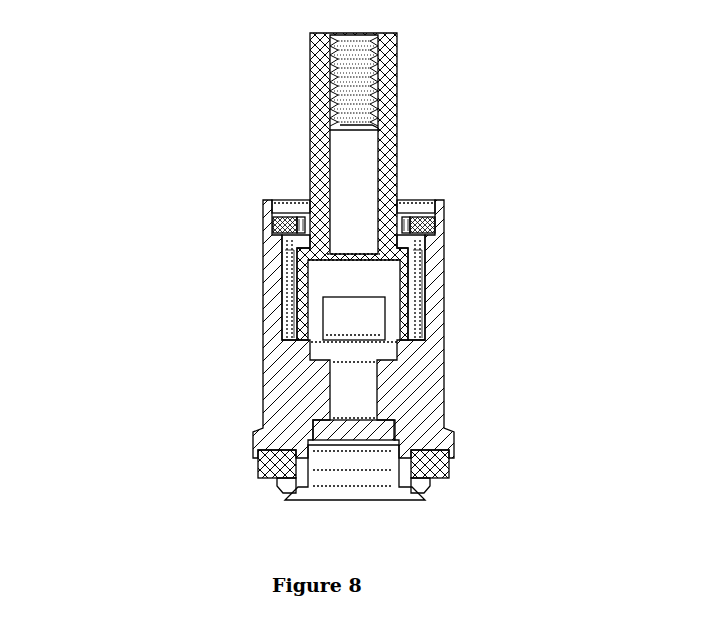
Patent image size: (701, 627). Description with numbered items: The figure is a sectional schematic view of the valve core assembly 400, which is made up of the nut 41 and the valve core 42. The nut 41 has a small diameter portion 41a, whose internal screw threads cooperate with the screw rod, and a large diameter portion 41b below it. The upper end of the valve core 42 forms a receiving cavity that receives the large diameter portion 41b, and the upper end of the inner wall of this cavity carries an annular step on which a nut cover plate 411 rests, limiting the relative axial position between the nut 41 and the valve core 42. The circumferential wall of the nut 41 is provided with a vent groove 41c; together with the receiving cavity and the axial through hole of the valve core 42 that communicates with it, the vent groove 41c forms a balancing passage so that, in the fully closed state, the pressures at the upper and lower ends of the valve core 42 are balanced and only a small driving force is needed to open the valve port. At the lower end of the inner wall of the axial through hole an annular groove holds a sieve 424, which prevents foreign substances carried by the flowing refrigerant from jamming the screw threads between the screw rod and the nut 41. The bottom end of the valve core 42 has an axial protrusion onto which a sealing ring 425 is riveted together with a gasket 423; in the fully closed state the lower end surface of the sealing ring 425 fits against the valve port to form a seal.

The valve core assembly 400 is at (192, 435).
The nut 41 is at (395, 80).
The small diameter portion 41a is at (310, 116).
The large diameter portion 41b is at (290, 252).
The nut cover plate 411 is at (442, 213).
The vent groove 41c is at (415, 280).
The valve core 42 is at (418, 410).
The sieve 424 is at (355, 430).
The sealing ring 425 is at (458, 445).
The gasket 423 is at (450, 472).